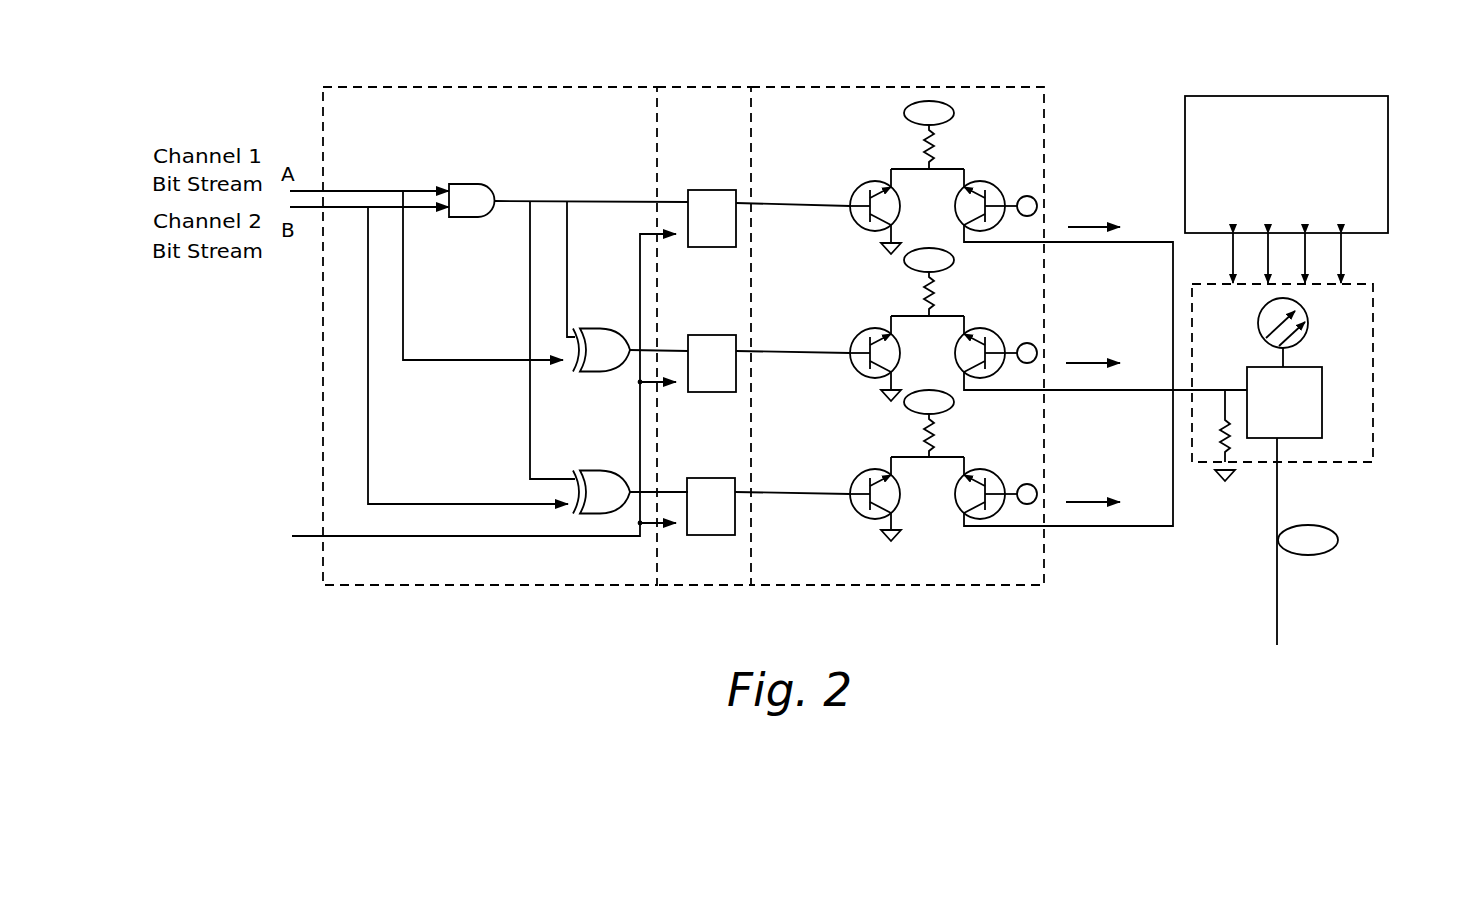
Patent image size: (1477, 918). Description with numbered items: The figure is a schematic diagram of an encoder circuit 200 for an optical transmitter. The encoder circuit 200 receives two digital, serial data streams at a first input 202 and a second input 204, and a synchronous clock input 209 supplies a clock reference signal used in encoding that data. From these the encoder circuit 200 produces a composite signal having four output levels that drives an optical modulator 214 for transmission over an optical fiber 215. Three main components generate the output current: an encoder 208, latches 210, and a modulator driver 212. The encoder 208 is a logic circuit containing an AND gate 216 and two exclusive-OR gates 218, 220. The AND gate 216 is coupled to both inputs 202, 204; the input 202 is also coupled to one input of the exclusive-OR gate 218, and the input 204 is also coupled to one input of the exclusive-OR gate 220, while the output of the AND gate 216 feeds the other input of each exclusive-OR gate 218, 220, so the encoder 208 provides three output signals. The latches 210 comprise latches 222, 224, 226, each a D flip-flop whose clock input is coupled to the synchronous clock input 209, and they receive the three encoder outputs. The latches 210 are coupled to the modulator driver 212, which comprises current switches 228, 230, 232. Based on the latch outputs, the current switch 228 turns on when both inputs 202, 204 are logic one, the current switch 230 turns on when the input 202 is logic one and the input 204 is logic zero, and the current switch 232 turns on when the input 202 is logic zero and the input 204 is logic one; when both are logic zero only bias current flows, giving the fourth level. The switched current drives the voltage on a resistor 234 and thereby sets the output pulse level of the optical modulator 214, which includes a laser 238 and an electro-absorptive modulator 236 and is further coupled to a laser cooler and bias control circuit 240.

The encoder circuit 200 is at (752, 88).
The input 202 is at (317, 187).
The input 204 is at (317, 211).
The encoder 208 is at (495, 87).
The synchronous clock input 209 is at (312, 537).
The latches 210 is at (686, 88).
The modulator driver 212 is at (896, 88).
The optical modulator 214 is at (1373, 399).
The optical fiber 215 is at (1277, 600).
The AND gate 216 is at (482, 218).
The exclusive-OR gate 218 is at (602, 327).
The exclusive-OR gate 220 is at (602, 469).
The latch 222 is at (722, 248).
The latch 224 is at (722, 394).
The latch 226 is at (720, 536).
The current switch 228 is at (973, 158).
The current switch 230 is at (966, 309).
The current switch 232 is at (966, 453).
The resistor 234 is at (1220, 447).
The electro-absorptive modulator 236 is at (1256, 366).
The laser 238 is at (1303, 340).
The laser cooler and bias control circuit 240 is at (1388, 110).